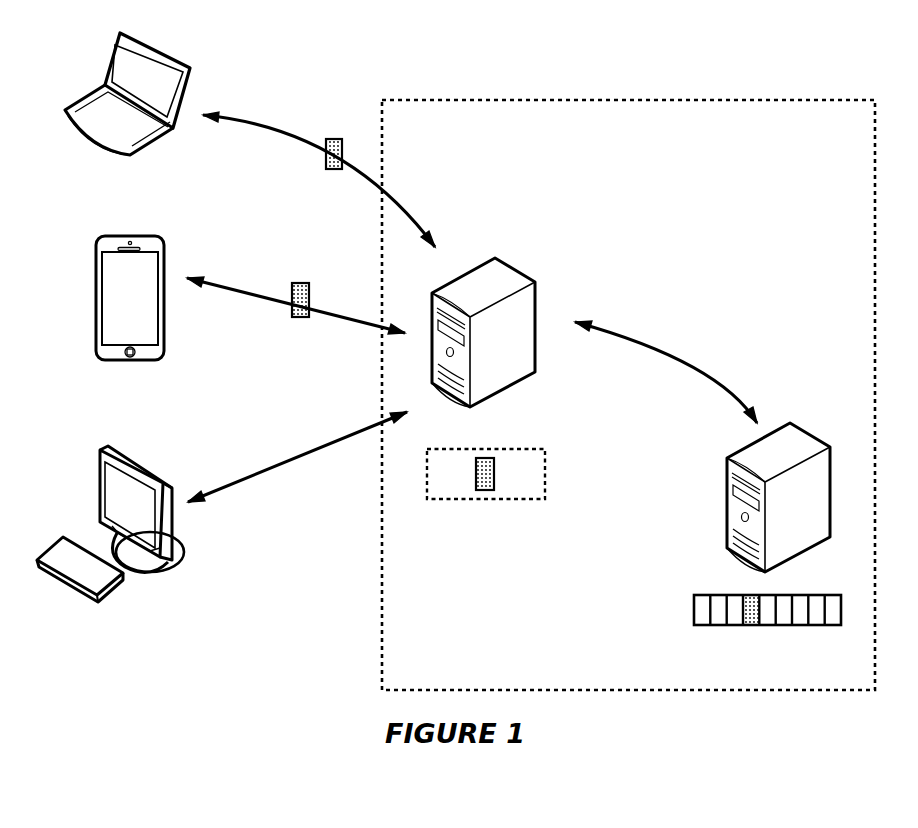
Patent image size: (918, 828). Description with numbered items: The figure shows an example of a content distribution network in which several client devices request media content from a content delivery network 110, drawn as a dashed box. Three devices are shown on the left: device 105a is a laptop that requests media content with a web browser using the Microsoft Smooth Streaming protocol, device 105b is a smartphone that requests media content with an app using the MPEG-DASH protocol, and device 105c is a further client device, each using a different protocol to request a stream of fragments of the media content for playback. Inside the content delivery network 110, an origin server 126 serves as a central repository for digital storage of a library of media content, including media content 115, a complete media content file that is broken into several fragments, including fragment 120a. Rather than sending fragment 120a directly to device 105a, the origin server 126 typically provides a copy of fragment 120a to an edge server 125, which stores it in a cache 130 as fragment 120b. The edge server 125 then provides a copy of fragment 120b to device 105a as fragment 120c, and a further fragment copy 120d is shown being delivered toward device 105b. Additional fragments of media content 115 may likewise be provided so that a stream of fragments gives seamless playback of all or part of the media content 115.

The device 105a is at (150, 43).
The device 105b is at (130, 236).
The device 105c is at (140, 460).
The content delivery network 110 is at (766, 100).
The media content 115 is at (682, 603).
The fragment 120a is at (752, 627).
The fragment 120b is at (486, 492).
The fragment 120c is at (334, 139).
The data item transmitted to mobile phone 120d is at (300, 283).
The edge server 125 is at (515, 275).
The origin server 126 is at (735, 458).
The cache 130 is at (505, 449).